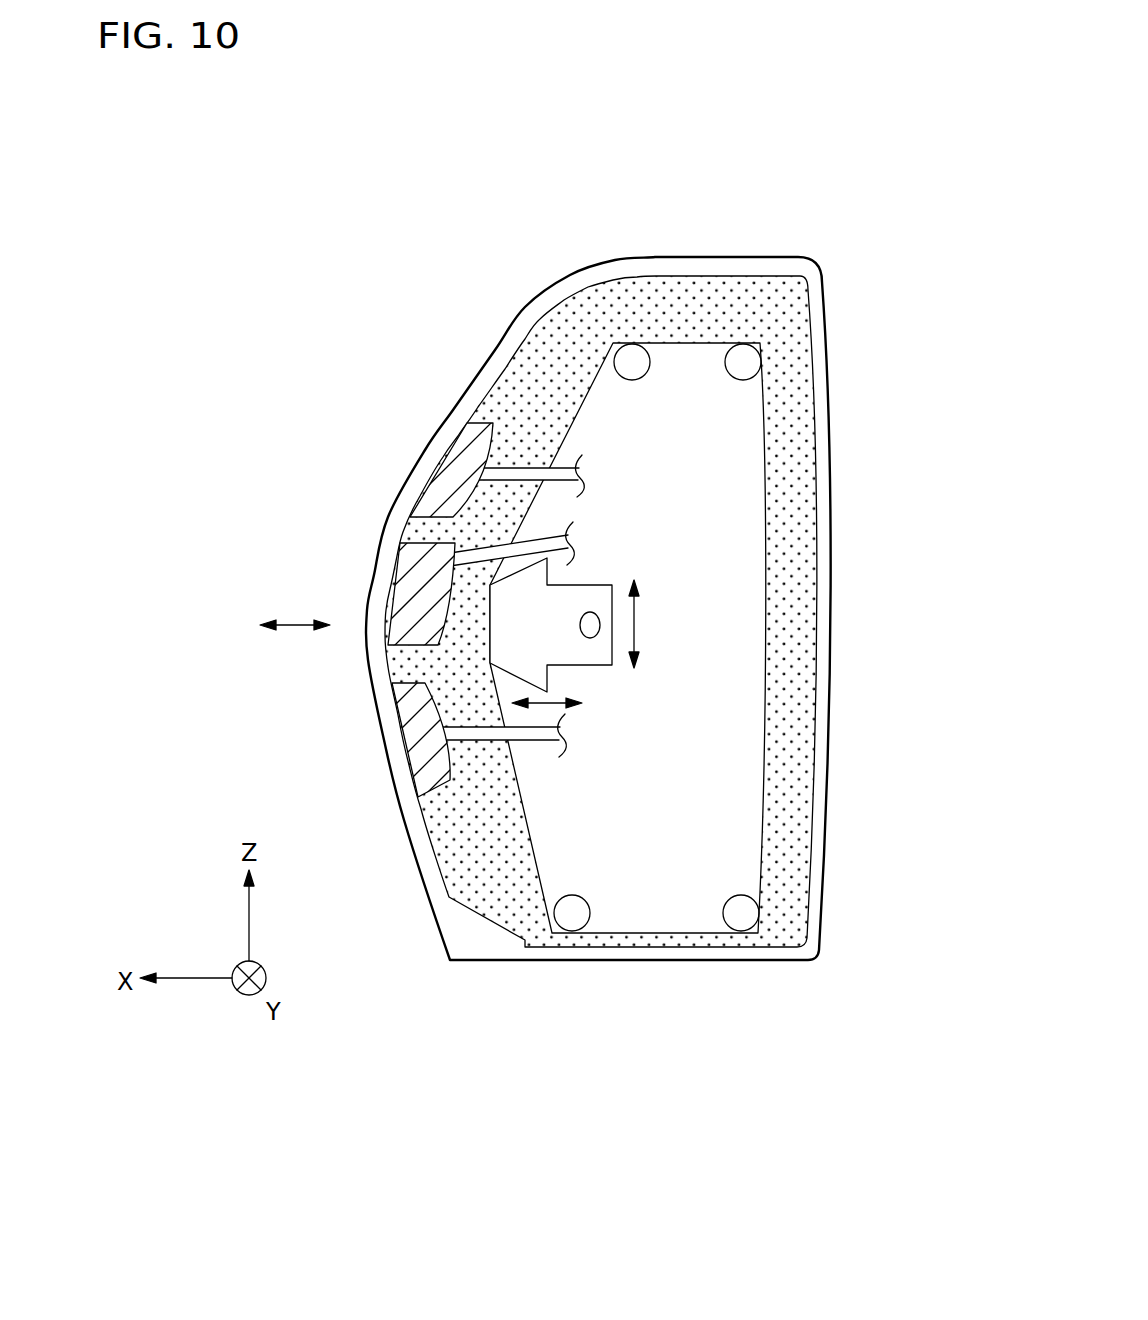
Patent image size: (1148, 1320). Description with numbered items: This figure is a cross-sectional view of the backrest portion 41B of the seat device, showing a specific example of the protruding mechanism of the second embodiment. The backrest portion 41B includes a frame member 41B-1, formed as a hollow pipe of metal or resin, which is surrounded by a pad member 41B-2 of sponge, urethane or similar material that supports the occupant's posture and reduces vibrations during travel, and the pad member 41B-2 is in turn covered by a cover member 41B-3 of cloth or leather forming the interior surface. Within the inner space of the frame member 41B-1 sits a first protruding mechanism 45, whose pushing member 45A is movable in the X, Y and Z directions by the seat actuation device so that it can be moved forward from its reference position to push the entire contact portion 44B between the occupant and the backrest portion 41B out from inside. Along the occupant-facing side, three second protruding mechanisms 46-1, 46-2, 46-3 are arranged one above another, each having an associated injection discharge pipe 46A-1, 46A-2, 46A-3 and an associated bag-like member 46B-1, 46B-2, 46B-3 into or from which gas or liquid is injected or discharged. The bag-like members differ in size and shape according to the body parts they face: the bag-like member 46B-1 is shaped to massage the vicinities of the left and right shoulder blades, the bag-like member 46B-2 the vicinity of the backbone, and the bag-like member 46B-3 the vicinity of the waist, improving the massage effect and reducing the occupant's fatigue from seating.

The backrest portion 41B is at (882, 93).
The frame member 41B-1 is at (715, 360).
The pad member 41B-2 is at (591, 293).
The cover member 41B-3 is at (538, 307).
The contact portion 44B is at (445, 376).
The first protruding mechanism 45 is at (576, 645).
The pushing member 45A is at (557, 577).
The second protruding mechanism 46-1 is at (496, 480).
The second protruding mechanism 46-2 is at (466, 591).
The second protruding mechanism 46-3 is at (436, 720).
The injection discharge pipe 46A-1 is at (567, 457).
The injection discharge pipe 46A-2 is at (533, 540).
The injection discharge pipe 46A-3 is at (490, 746).
The bag-like member 46B-1 is at (447, 441).
The bag-like member 46B-2 is at (403, 563).
The bag-like member 46B-3 is at (402, 710).